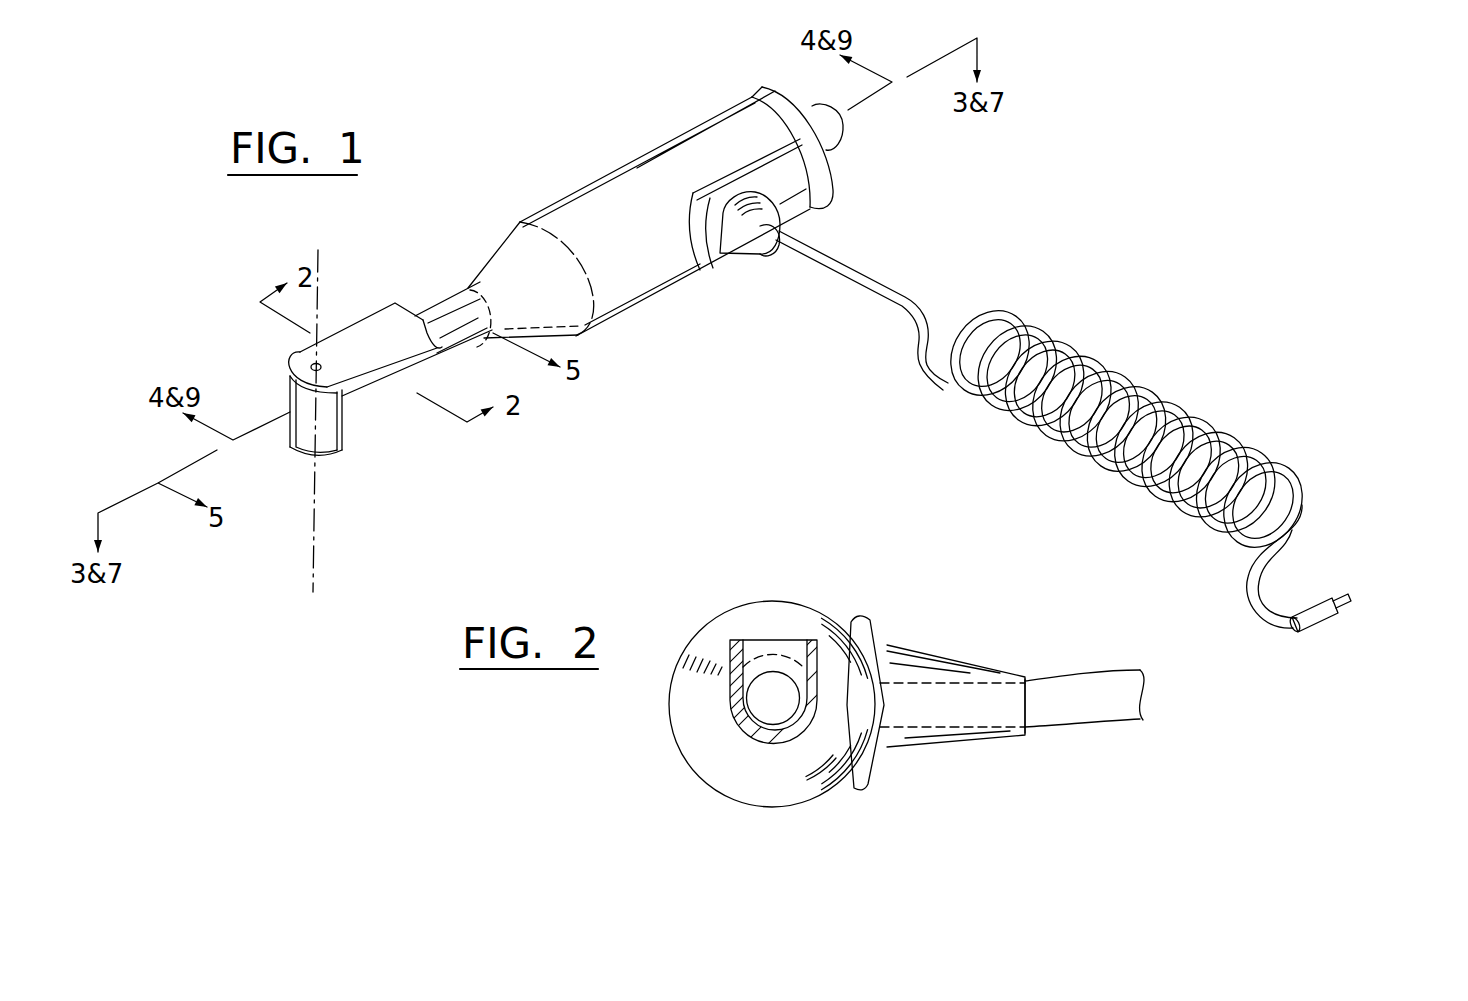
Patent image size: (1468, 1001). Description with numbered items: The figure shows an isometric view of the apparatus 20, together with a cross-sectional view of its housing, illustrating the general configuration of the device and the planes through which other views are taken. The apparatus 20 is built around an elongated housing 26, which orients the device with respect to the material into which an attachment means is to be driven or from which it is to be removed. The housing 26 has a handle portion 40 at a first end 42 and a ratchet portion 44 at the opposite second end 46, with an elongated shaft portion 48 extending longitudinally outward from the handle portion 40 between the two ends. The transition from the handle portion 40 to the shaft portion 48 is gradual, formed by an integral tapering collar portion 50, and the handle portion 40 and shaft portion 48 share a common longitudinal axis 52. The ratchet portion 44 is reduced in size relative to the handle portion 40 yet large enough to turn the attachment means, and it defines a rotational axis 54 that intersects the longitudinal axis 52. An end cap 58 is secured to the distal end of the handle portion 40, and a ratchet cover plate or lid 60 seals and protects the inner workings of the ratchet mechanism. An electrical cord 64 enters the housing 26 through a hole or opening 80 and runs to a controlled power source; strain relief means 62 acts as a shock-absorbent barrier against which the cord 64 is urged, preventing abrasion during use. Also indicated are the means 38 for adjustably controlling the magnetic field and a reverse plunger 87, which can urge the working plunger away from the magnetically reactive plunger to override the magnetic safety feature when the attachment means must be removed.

In FIG. 1, the apparatus 20 is at (1013, 248).
In FIG. 1, the elongated housing 26 is at (620, 157).
In FIG. 1, the means for adjustably controlling the magnetic field 38 is at (1356, 594).
In FIG. 1, the handle portion 40 is at (707, 136).
In FIG. 2, the handle portion 40 is at (780, 602).
In FIG. 1, the first end 42 is at (746, 100).
In FIG. 1, the ratchet portion 44 is at (340, 437).
In FIG. 1, the second end 46 is at (287, 427).
In FIG. 1, the elongated shaft portion 48 is at (442, 303).
In FIG. 2, the elongated shaft portion 48 is at (730, 708).
In FIG. 1, the tapering collar portion 50 is at (500, 237).
In FIG. 2, the tapering collar portion 50 is at (708, 767).
In FIG. 1, the longitudinal axis 52 is at (287, 413).
In FIG. 1, the rotational axis 54 is at (307, 340).
In FIG. 1, the end cap 58 is at (835, 160).
In FIG. 1, the ratchet cover plate or lid 60 is at (360, 350).
In FIG. 1, the strain relief means 62 is at (742, 247).
In FIG. 2, the strain relief means 62 is at (930, 757).
In FIG. 1, the electrical cord 64 is at (880, 307).
In FIG. 2, the electrical cord 64 is at (1070, 687).
In FIG. 1, the hole or opening 80 is at (767, 243).
In FIG. 2, the hole or opening 80 is at (1030, 730).
In FIG. 1, the reverse plunger 87 is at (840, 133).